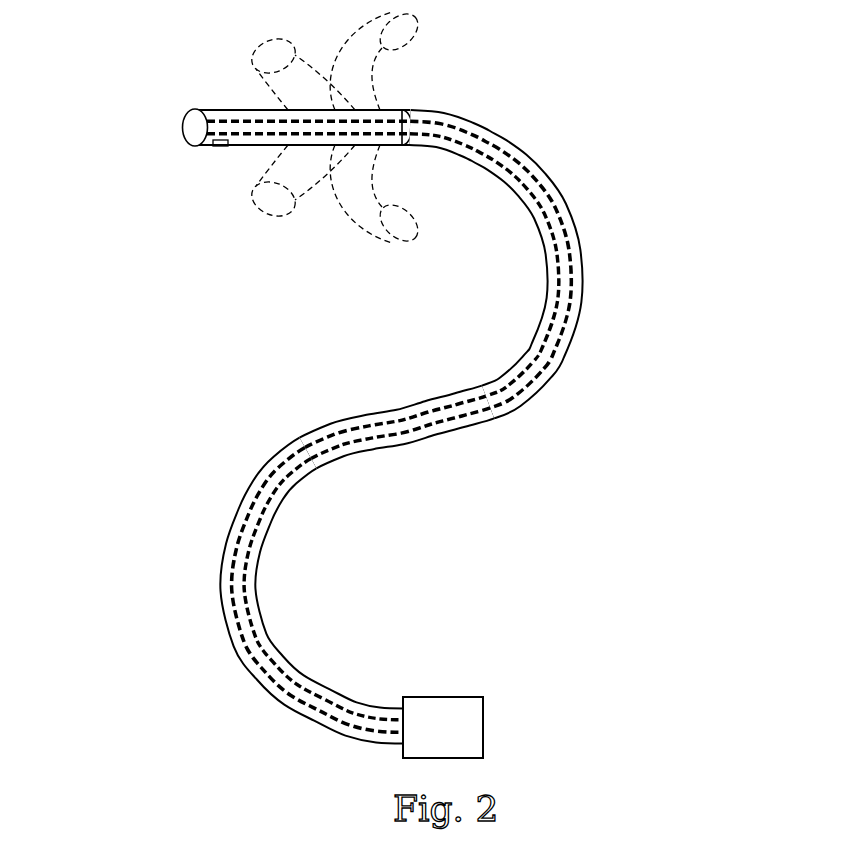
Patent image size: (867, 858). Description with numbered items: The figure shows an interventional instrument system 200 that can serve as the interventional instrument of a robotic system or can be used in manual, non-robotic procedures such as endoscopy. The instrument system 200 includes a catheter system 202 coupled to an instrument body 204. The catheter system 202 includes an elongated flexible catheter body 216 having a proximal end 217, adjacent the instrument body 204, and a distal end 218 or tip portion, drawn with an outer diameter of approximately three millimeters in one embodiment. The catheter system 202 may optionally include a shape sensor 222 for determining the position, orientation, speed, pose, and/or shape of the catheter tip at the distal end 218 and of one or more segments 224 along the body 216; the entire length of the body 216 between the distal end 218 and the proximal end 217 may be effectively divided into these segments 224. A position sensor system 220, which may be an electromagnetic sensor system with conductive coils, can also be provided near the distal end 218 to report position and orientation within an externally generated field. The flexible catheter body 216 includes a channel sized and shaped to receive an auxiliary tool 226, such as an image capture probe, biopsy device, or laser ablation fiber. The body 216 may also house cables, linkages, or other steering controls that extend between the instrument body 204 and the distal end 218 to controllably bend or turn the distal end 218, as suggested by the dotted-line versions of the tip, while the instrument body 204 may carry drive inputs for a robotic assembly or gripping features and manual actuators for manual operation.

The interventional instrument system 200 is at (371, 413).
The catheter system 202 is at (451, 468).
The instrument body 204 is at (483, 725).
The flexible catheter body 216 is at (448, 425).
The proximal end 217 is at (353, 763).
The distal end 218 is at (251, 127).
The position sensor system 220 is at (215, 146).
The shape sensor 222 is at (500, 260).
The segments 224 is at (538, 390).
The auxiliary tool 226 is at (522, 193).